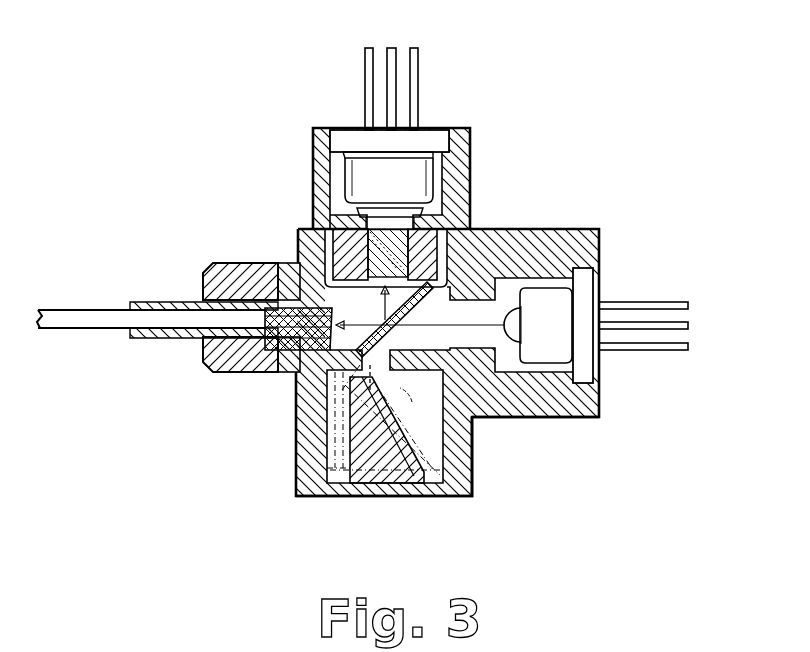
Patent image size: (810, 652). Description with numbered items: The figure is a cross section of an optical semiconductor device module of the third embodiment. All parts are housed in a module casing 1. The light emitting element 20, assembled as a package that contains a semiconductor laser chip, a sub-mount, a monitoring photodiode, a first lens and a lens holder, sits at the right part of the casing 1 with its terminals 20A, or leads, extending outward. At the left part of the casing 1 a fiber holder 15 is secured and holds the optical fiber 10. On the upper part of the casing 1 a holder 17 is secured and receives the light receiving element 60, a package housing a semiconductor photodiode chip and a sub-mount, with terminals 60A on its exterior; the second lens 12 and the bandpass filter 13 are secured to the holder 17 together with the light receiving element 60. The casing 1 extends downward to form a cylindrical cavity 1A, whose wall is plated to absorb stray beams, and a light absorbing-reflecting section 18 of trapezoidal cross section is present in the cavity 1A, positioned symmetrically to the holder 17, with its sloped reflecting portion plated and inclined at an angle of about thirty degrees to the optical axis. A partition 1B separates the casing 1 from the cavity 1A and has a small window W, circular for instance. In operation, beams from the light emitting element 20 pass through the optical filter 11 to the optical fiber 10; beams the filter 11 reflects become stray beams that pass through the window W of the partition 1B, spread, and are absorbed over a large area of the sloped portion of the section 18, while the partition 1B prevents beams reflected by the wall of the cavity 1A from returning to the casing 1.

The module casing 1 is at (585, 229).
The cylindrical cavity 1A is at (473, 433).
The partition 1B is at (533, 418).
The optical fiber 10 is at (72, 309).
The optical filter 11 is at (296, 403).
The second lens 12 is at (298, 267).
The bandpass filter 13 is at (422, 212).
The fiber holder 15 is at (228, 263).
The holder 17 is at (470, 160).
The light absorbing-reflecting section 18 is at (414, 497).
The light emitting element 20 is at (599, 288).
The terminals 20A is at (652, 283).
The light receiving element 60 is at (440, 131).
The terminals 60A is at (357, 97).
The window W is at (395, 358).